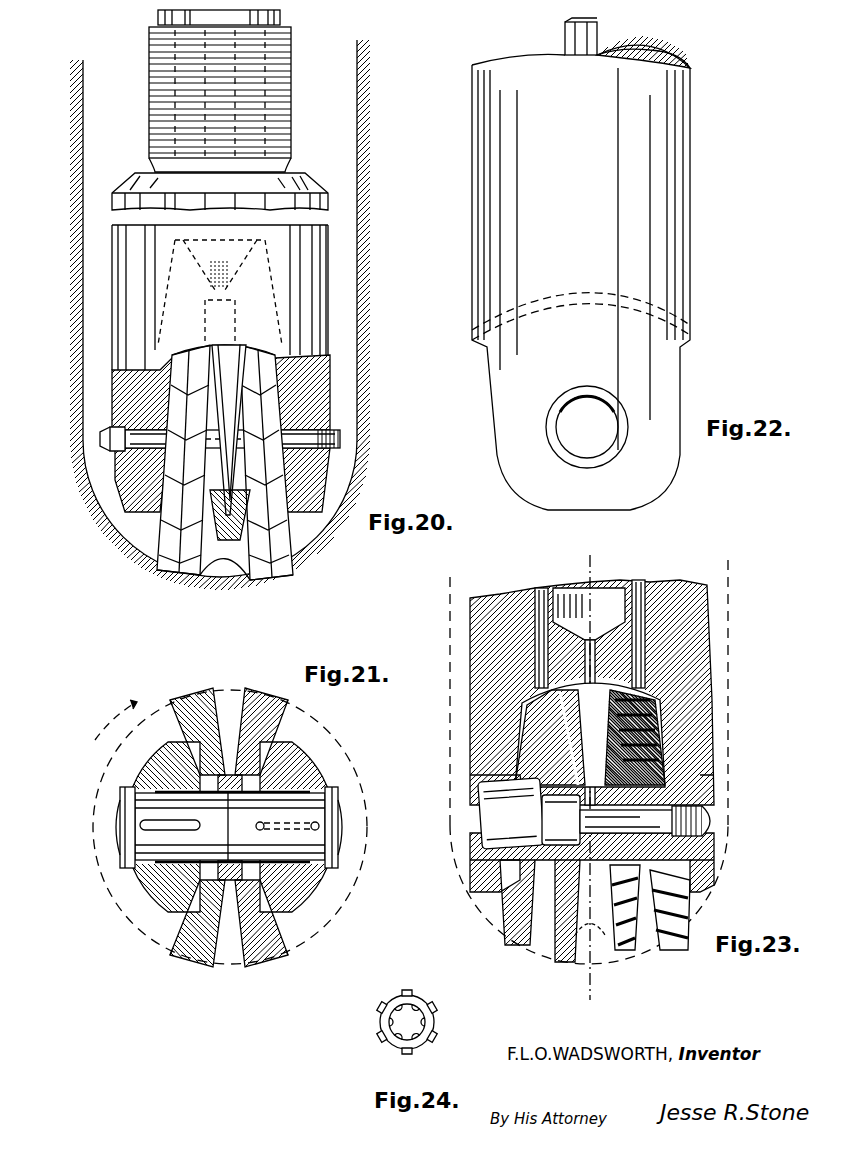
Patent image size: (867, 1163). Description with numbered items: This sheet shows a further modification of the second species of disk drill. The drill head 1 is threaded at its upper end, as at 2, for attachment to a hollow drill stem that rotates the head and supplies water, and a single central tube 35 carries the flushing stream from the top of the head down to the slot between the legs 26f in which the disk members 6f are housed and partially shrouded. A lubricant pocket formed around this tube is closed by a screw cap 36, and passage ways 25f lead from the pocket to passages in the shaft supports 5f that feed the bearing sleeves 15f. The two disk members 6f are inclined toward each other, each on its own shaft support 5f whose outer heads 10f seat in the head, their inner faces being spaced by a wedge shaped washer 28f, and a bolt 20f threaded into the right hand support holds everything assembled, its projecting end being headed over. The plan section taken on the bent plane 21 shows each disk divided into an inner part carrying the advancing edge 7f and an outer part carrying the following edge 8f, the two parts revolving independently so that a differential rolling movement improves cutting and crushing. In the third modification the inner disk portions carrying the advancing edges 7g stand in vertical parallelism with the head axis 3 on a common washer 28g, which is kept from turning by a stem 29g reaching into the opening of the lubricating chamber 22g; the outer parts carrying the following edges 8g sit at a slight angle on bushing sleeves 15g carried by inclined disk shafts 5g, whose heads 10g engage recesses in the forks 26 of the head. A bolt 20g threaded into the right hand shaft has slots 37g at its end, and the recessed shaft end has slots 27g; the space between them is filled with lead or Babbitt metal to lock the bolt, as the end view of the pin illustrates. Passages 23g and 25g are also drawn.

In FIG. 20, the screw cap 36 is at (282, 16).
In FIG. 20, the central tube 35 is at (232, 53).
In FIG. 22, the central tube 35 is at (600, 27).
In FIG. 20, the threaded upper end 2 is at (291, 116).
In FIG. 20, the head 1 is at (330, 252).
In FIG. 20, the passage ways 25f is at (165, 296).
In FIG. 21, the passage ways 25f is at (182, 820).
In FIG. 20, the heads of the shaft supports 10f is at (335, 395).
In FIG. 21, the heads of the shaft supports 10f is at (312, 860).
In FIG. 20, the shaft support 5f is at (335, 417).
In FIG. 21, the shaft support 5f is at (312, 808).
In FIG. 20, the section plane 21- 21 is at (97, 431).
In FIG. 20, the bolt 20f is at (110, 440).
In FIG. 21, the bolt 20f is at (341, 826).
In FIG. 20, the legs of the drill head 26f is at (140, 500).
In FIG. 20, the wedge shaped washer 28f is at (228, 495).
In FIG. 21, the wedge shaped washer 28f is at (228, 945).
In FIG. 20, the disk members 6f is at (165, 576).
In FIG. 21, the advancing edges 7f is at (213, 688).
In FIG. 21, the following edges 8f is at (283, 700).
In FIG. 21, the bearing sleeve 15f is at (275, 790).
In FIG. 23, the axis of the drill head 3 is at (592, 780).
In FIG. 23, the lubricating chamber 22g is at (589, 614).
In FIG. 23, the passage 23g is at (638, 585).
In FIG. 23, the passage 25g is at (588, 640).
In FIG. 23, the stem 29g is at (598, 660).
In FIG. 23, the forks of the drill head 26 is at (712, 715).
In FIG. 23, the heads of the disk shafts 10g is at (475, 780).
In FIG. 23, the inclined disk shaft 5g is at (485, 828).
In FIG. 23, the bolt 20g is at (638, 821).
In FIG. 23, the slots of the bolt 37g is at (715, 822).
In FIG. 24, the slots of the bolt 37g is at (395, 1000).
In FIG. 23, the bushing sleeve 15g is at (500, 865).
In FIG. 23, the following edges 8g is at (503, 933).
In FIG. 23, the common washer 28g is at (591, 924).
In FIG. 23, the advancing edges 7g is at (560, 962).
In FIG. 24, the slots of the shaft recess 27g is at (378, 1003).